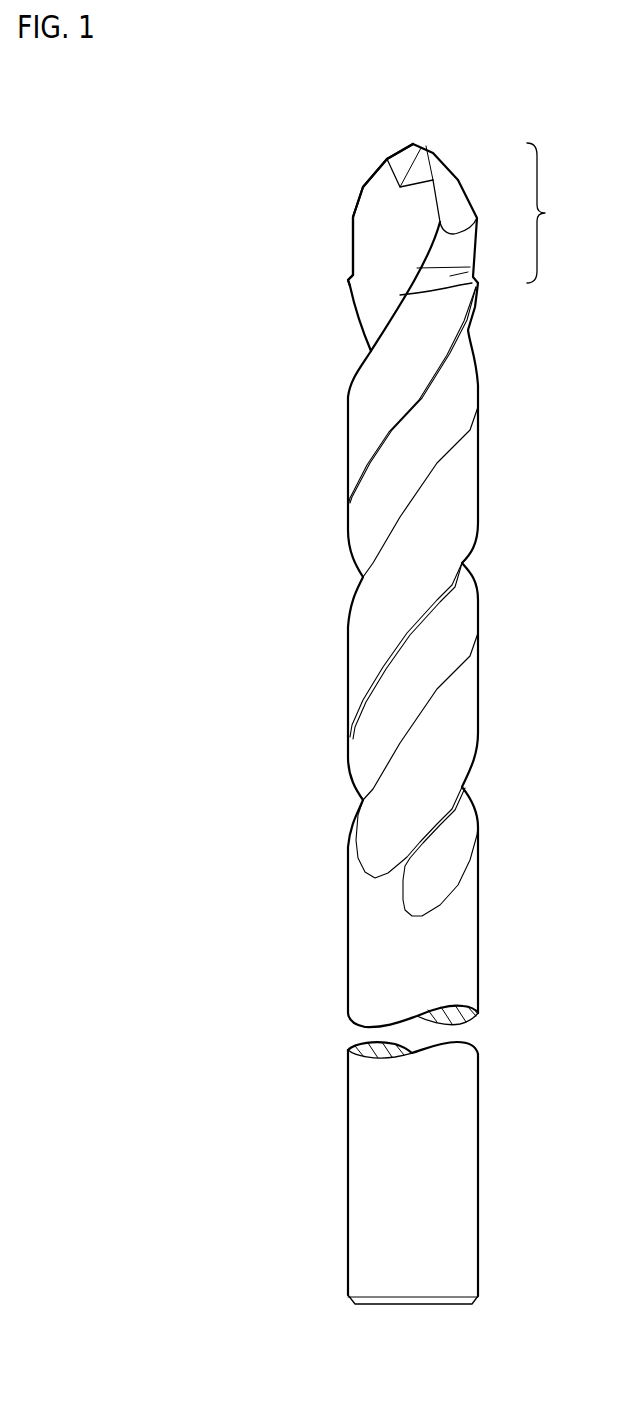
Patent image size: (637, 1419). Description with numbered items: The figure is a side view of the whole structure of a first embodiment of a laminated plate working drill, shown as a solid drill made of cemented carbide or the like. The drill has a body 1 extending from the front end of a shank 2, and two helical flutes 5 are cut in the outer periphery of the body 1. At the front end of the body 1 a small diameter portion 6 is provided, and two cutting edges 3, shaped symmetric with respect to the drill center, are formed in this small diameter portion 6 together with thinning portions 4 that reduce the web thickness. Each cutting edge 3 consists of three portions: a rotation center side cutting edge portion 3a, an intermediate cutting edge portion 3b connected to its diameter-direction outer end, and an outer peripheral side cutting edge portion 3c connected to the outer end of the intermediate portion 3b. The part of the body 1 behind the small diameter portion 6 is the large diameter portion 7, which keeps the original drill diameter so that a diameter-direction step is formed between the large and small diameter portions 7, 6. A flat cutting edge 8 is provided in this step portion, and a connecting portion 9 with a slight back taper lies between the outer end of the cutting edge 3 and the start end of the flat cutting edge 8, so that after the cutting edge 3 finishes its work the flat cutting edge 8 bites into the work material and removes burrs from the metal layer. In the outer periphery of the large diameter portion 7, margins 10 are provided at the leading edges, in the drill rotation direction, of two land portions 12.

The body 1 is at (484, 617).
The shank 2 is at (457, 1167).
The cutting edge 3 is at (388, 153).
The rotation center side cutting edge portion 3a is at (399, 152).
The intermediate cutting edge portion 3b is at (377, 165).
The outer peripheral side cutting edge portion 3c is at (353, 210).
The thinning portion 4 is at (418, 156).
The helical flute 5 is at (390, 463).
The small diameter portion 6 is at (546, 213).
The large diameter portion 7 is at (480, 705).
The flat cutting edge 8 is at (350, 281).
The connecting portion 9 is at (351, 243).
The margin 10 is at (437, 372).
The land portion 12 is at (377, 393).